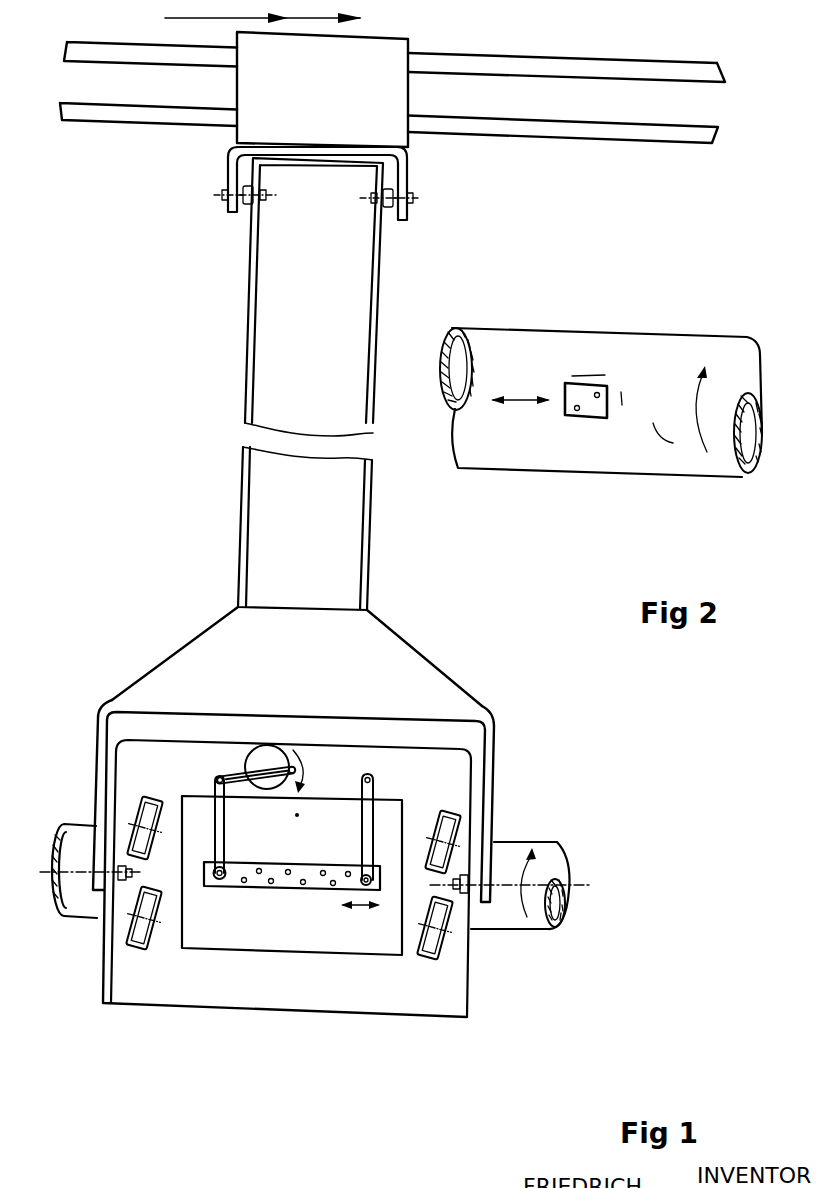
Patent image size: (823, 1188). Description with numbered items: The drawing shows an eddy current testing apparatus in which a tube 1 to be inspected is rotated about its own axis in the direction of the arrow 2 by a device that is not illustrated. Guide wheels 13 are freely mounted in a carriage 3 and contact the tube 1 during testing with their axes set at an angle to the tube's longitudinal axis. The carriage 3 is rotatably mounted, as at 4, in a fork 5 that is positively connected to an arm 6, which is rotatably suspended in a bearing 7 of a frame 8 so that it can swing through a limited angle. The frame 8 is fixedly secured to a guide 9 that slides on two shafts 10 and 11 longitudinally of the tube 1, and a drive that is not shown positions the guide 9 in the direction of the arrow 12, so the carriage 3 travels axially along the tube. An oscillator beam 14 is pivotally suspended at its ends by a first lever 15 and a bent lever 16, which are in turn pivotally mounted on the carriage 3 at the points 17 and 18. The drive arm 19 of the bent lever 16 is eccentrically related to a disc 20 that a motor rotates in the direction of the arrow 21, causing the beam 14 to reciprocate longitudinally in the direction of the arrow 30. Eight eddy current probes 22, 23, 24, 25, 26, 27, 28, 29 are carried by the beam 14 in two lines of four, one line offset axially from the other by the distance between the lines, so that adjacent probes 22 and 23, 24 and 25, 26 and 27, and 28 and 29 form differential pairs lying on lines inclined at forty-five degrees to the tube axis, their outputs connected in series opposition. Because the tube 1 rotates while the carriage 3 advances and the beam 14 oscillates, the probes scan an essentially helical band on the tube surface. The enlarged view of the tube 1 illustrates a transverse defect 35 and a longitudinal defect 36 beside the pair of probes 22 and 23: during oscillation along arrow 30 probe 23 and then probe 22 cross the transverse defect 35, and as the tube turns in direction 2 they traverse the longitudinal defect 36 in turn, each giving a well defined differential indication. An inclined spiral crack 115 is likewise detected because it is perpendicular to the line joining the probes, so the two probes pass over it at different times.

In FIG. 1, the tube 1 is at (541, 920).
In FIG. 2, the tube 1 is at (492, 464).
In FIG. 1, the arrow 2 is at (527, 885).
In FIG. 2, the arrow 2 is at (695, 403).
In FIG. 1, the carriage 3 is at (198, 990).
In FIG. 1, the rotatable mounting 4 is at (121, 884).
In FIG. 1, the fork 5 is at (235, 648).
In FIG. 1, the arm 6 is at (277, 525).
In FIG. 1, the bearing 7 is at (236, 215).
In FIG. 1, the frame 8 is at (403, 177).
In FIG. 1, the guide 9 is at (377, 63).
In FIG. 1, the shaft 10 is at (638, 134).
In FIG. 1, the shaft 11 is at (648, 72).
In FIG. 1, the arrow 12 is at (249, 18).
In FIG. 1, the guide wheels 13 is at (140, 944).
In FIG. 1, the oscillator beam 14 is at (285, 884).
In FIG. 2, the oscillator beam 14 is at (581, 397).
In FIG. 1, the first lever 15 is at (371, 826).
In FIG. 1, the bent lever 16 is at (216, 796).
In FIG. 1, the pivot point 17 is at (370, 777).
In FIG. 1, the pivot point 18 is at (217, 778).
In FIG. 1, the drive arm 19 is at (238, 756).
In FIG. 1, the disc 20 is at (273, 755).
In FIG. 1, the arrow 21 is at (347, 721).
In FIG. 1, the eddy current probe 22 is at (242, 884).
In FIG. 2, the eddy current probe 22 is at (576, 411).
In FIG. 1, the eddy current probe 23 is at (257, 869).
In FIG. 2, the eddy current probe 23 is at (596, 398).
In FIG. 1, the eddy current probe 24 is at (269, 885).
In FIG. 1, the eddy current probe 25 is at (287, 869).
In FIG. 1, the eddy current probe 26 is at (303, 886).
In FIG. 1, the eddy current probe 27 is at (322, 870).
In FIG. 1, the eddy current probe 28 is at (333, 887).
In FIG. 1, the eddy current probe 29 is at (348, 871).
In FIG. 1, the arrow 30 is at (358, 911).
In FIG. 2, the arrow 30 is at (524, 407).
In FIG. 2, the transverse defect 35 is at (621, 409).
In FIG. 2, the longitudinal defect 36 is at (603, 375).
In FIG. 2, the crack 115 is at (673, 443).